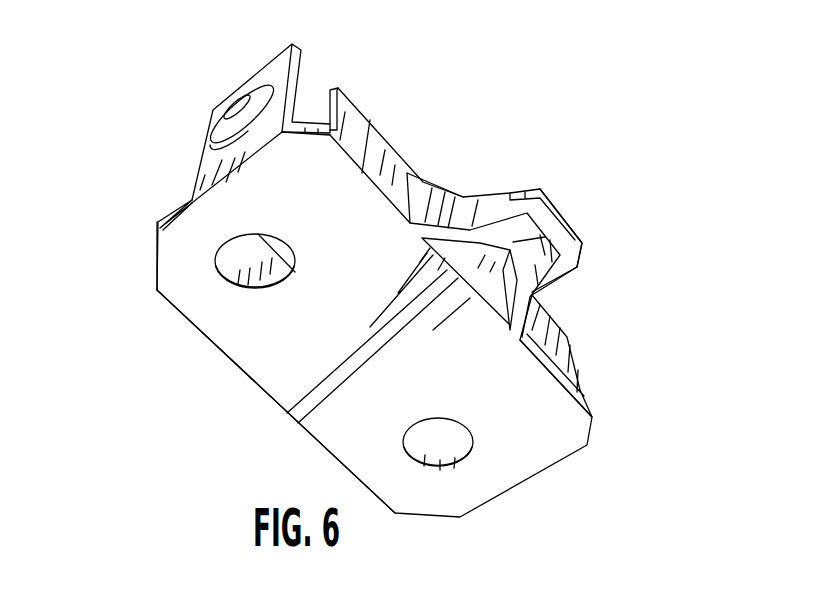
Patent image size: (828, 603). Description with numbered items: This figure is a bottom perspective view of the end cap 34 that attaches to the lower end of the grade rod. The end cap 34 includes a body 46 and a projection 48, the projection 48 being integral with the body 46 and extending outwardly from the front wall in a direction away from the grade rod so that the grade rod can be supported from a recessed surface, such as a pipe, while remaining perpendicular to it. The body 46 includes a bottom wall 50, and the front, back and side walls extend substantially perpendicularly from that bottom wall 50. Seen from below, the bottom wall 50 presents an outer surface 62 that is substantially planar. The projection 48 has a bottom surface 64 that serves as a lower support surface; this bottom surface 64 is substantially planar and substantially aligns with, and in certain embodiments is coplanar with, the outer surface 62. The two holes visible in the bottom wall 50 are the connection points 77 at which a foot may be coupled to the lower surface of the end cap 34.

The end cap 34 is at (582, 105).
The body 46 is at (140, 242).
The projection 48 is at (570, 212).
The bottom wall 50 is at (178, 290).
The outer surface 62 is at (222, 325).
The bottom surface 64 is at (562, 277).
The connection points 77 is at (433, 470).